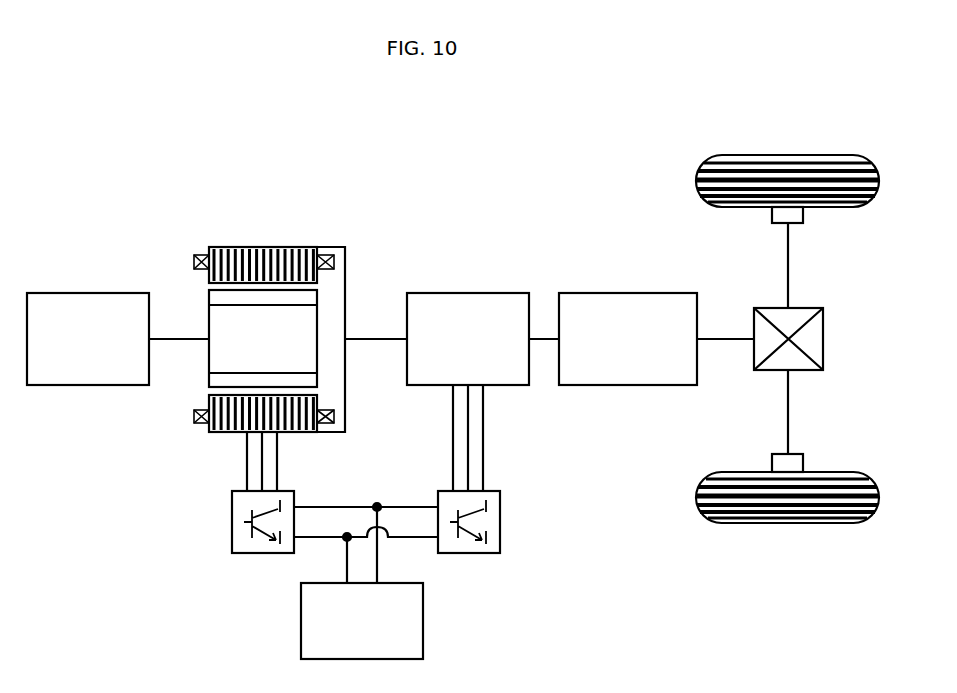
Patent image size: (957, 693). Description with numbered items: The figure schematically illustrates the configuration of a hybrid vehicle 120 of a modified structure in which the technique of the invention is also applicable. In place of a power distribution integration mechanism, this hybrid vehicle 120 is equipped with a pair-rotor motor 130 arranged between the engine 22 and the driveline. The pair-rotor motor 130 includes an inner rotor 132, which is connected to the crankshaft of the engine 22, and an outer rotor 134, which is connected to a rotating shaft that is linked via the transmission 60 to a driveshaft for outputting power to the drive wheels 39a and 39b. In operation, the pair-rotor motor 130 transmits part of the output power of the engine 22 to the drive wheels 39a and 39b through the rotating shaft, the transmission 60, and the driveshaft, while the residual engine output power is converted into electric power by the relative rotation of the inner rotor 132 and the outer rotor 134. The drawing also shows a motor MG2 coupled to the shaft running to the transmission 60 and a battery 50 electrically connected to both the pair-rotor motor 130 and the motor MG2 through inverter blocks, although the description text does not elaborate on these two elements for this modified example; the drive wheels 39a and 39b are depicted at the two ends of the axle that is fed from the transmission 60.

The hybrid vehicle 120 is at (343, 132).
The engine 22 is at (90, 293).
The pair-rotor motor 130 is at (163, 155).
The inner rotor 132 is at (209, 317).
The outer rotor 134 is at (272, 247).
The motor MG2 is at (468, 293).
The transmission 60 is at (630, 293).
The drive wheel 39a is at (788, 155).
The drive wheel 39b is at (788, 523).
The battery 50 is at (423, 619).